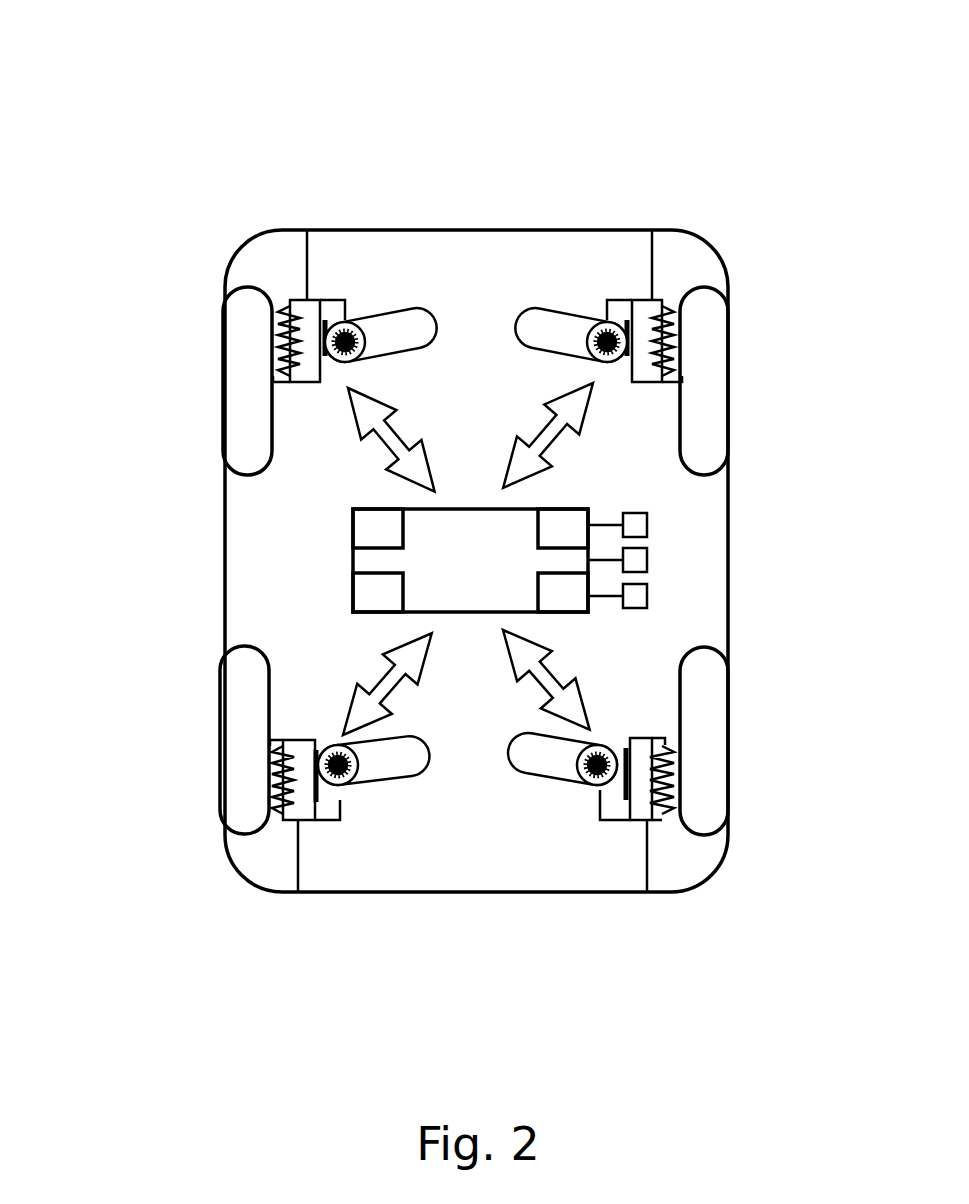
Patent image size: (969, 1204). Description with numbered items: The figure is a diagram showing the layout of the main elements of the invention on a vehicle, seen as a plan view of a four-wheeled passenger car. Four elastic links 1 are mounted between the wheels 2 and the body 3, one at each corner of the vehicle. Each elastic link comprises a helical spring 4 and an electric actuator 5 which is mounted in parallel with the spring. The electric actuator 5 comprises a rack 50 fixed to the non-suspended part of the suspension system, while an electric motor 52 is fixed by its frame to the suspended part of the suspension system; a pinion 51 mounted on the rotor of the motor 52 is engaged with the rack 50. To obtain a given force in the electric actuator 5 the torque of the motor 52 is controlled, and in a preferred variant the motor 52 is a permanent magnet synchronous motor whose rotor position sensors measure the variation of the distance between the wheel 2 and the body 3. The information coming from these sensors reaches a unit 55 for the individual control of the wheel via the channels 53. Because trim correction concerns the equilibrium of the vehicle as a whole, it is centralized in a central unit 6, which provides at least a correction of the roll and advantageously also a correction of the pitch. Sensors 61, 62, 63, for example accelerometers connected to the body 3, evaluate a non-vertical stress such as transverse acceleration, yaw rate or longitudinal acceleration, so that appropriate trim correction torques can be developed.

The elastic link 1 is at (286, 187).
The wheel 2 is at (230, 392).
The body 3 is at (485, 247).
The helical spring 4 is at (283, 300).
The electric actuator 5 is at (332, 295).
The central unit 6 is at (462, 528).
The rack 50 is at (332, 325).
The pinion 51 is at (343, 363).
The electric motor 52 is at (393, 326).
The channels 53 is at (400, 693).
The unit for the individual control of the wheel 55 is at (370, 588).
The sensor 61 is at (645, 522).
The sensor 62 is at (647, 559).
The sensor 63 is at (647, 597).